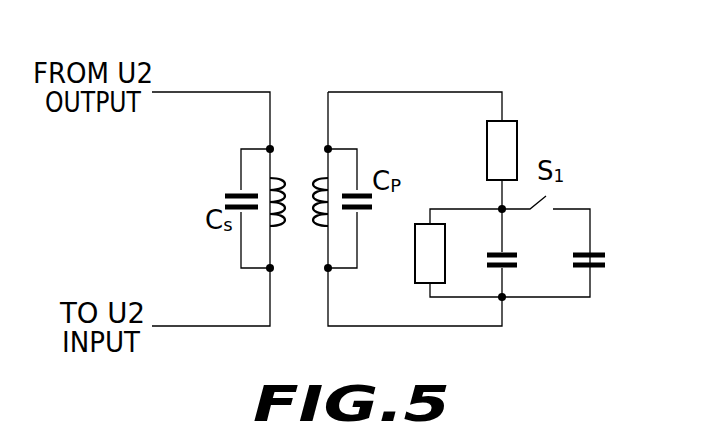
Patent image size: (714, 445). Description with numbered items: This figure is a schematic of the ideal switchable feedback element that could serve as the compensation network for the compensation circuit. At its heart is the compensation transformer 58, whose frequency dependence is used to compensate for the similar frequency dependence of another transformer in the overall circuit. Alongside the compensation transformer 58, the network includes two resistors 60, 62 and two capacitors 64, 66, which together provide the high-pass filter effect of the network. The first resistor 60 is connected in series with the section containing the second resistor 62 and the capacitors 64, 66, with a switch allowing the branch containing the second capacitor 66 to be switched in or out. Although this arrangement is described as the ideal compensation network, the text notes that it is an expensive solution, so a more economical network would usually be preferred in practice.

The compensation transformer 58 is at (295, 140).
The resistor 60 is at (517, 122).
The resistor 62 is at (418, 284).
The capacitor 64 is at (517, 267).
The capacitor 66 is at (605, 267).